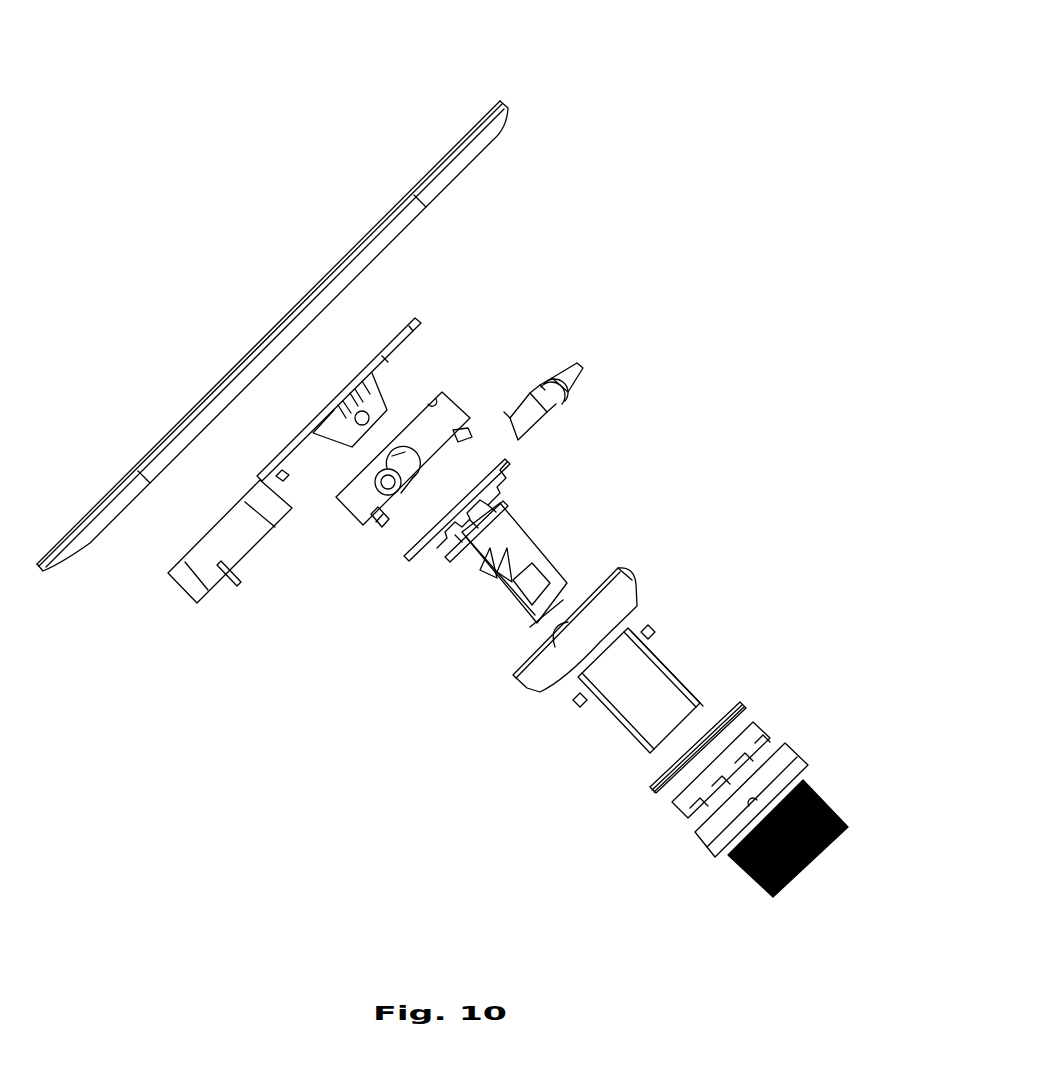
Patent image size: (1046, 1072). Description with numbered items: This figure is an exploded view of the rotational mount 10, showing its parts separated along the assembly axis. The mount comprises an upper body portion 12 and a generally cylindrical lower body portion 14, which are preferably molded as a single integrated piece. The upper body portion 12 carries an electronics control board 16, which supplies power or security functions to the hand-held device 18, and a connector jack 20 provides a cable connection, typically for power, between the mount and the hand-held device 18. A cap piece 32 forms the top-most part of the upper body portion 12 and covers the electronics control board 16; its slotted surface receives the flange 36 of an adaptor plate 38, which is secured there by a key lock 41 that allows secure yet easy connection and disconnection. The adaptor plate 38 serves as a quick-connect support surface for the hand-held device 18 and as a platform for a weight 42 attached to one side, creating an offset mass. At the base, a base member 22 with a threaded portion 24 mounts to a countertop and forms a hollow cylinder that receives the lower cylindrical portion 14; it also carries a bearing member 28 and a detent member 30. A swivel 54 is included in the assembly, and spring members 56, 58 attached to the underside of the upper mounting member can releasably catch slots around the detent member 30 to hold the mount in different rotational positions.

The rotational mount 10 is at (650, 203).
The upper body portion 12 is at (647, 592).
The lower body portion 14 is at (690, 667).
The electronics control board 16 is at (418, 575).
The hand-held device 18 is at (318, 274).
The connector jack 20 is at (571, 410).
The base member 22 is at (801, 747).
The threaded portion 24 is at (750, 877).
The bearing member 28 is at (755, 722).
The detent member 30 is at (653, 793).
The cap piece 32 is at (455, 400).
The flange 36 is at (378, 398).
The adaptor plate 38 is at (408, 342).
The key lock 41 is at (381, 484).
The weight 42 is at (216, 588).
The swivel 54 is at (527, 542).
The spring member 56 is at (655, 630).
The spring member 58 is at (575, 705).